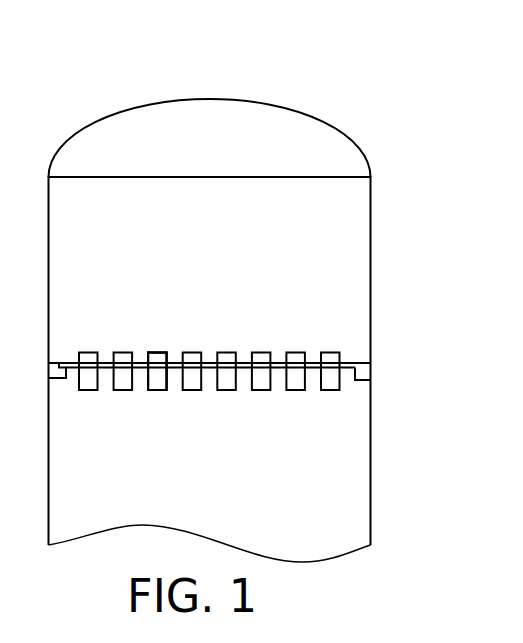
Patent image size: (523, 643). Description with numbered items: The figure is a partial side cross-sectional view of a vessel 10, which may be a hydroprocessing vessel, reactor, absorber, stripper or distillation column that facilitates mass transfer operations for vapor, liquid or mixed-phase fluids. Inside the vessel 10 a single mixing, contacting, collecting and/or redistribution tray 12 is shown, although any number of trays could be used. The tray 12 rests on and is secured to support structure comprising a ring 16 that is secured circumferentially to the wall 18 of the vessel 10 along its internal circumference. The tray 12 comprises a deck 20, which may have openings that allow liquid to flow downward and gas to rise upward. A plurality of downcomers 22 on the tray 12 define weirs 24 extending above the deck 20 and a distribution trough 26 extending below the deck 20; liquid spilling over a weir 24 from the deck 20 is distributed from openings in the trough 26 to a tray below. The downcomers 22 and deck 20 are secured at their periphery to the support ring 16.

The vessel 10 is at (393, 91).
The tray 12 is at (248, 366).
The ring 16 is at (363, 382).
The wall 18 is at (371, 318).
The deck 20 is at (173, 368).
The downcomers 22 is at (262, 390).
The weirs 24 is at (146, 352).
The distribution trough 26 is at (147, 388).